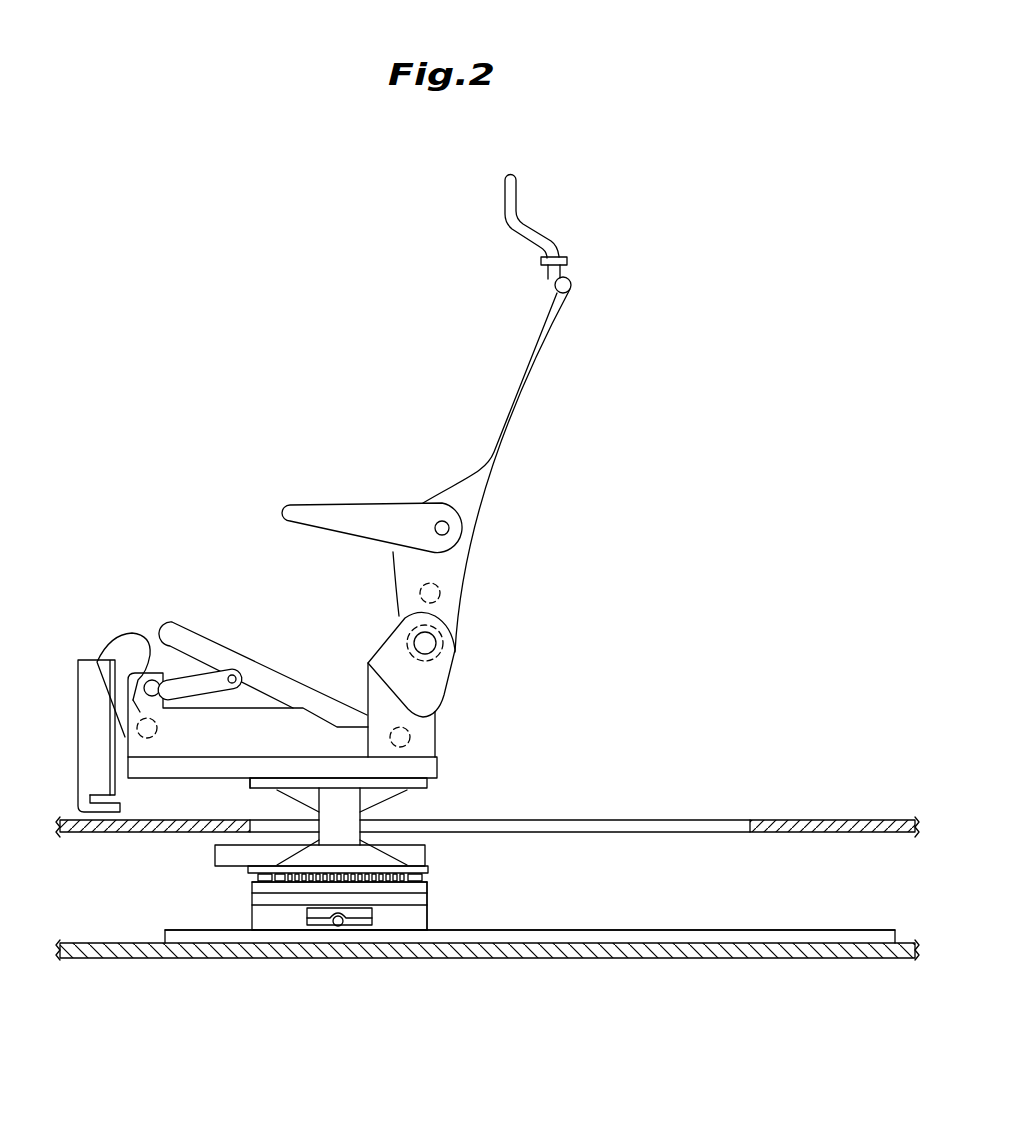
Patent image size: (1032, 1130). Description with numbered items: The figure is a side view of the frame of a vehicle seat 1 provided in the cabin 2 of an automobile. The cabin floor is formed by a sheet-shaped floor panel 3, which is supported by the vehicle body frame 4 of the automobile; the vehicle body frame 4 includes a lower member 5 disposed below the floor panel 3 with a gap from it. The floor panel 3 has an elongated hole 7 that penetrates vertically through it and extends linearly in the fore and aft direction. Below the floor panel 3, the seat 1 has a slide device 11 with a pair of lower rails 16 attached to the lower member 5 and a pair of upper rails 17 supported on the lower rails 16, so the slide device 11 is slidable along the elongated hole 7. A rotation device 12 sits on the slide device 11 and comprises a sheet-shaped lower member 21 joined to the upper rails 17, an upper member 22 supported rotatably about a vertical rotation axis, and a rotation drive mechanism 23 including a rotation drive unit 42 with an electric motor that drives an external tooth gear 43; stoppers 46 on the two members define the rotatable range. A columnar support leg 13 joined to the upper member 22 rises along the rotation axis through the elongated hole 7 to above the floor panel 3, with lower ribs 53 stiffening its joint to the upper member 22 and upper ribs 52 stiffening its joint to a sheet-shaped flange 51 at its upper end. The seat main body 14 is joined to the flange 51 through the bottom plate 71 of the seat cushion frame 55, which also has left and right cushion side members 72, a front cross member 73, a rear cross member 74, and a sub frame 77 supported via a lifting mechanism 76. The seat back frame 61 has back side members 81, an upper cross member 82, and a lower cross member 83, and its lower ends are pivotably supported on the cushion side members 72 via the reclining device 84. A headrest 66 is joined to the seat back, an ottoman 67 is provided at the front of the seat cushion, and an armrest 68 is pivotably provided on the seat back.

The vehicle seat 1 is at (320, 205).
The cabin 2 is at (717, 408).
The floor panel 3 is at (800, 820).
The vehicle body frame 4 is at (712, 960).
The lower member 5 is at (800, 950).
The elongated hole 7 is at (658, 820).
The slide device 11 is at (250, 913).
The rotation device 12 is at (250, 878).
The support leg 13 is at (360, 805).
The seat main body 14 is at (570, 306).
The lower rail 16 is at (830, 930).
The upper rail 17 is at (427, 925).
The lower member 21 is at (427, 888).
The upper member 22 is at (428, 868).
The rotation drive mechanism 23 is at (430, 878).
The rotation drive unit 42 is at (215, 852).
The external tooth gear 43 is at (297, 883).
The stopper 46 is at (397, 883).
The flange 51 is at (427, 786).
The upper rib 52 is at (293, 797).
The lower rib 53 is at (385, 858).
The seat cushion frame 55 is at (173, 616).
The seat back frame 61 is at (532, 405).
The headrest 66 is at (522, 172).
The ottoman 67 is at (76, 672).
The armrest 68 is at (312, 497).
The bottom plate 71 is at (337, 765).
The cushion side member 72 is at (275, 717).
The front cross member 73 is at (145, 720).
The rear cross member 74 is at (410, 737).
The lifting mechanism 76 is at (145, 698).
The sub frame 77 is at (228, 667).
The back side member 81 is at (488, 472).
The upper cross member 82 is at (574, 282).
The lower cross member 83 is at (441, 590).
The reclining device 84 is at (443, 640).